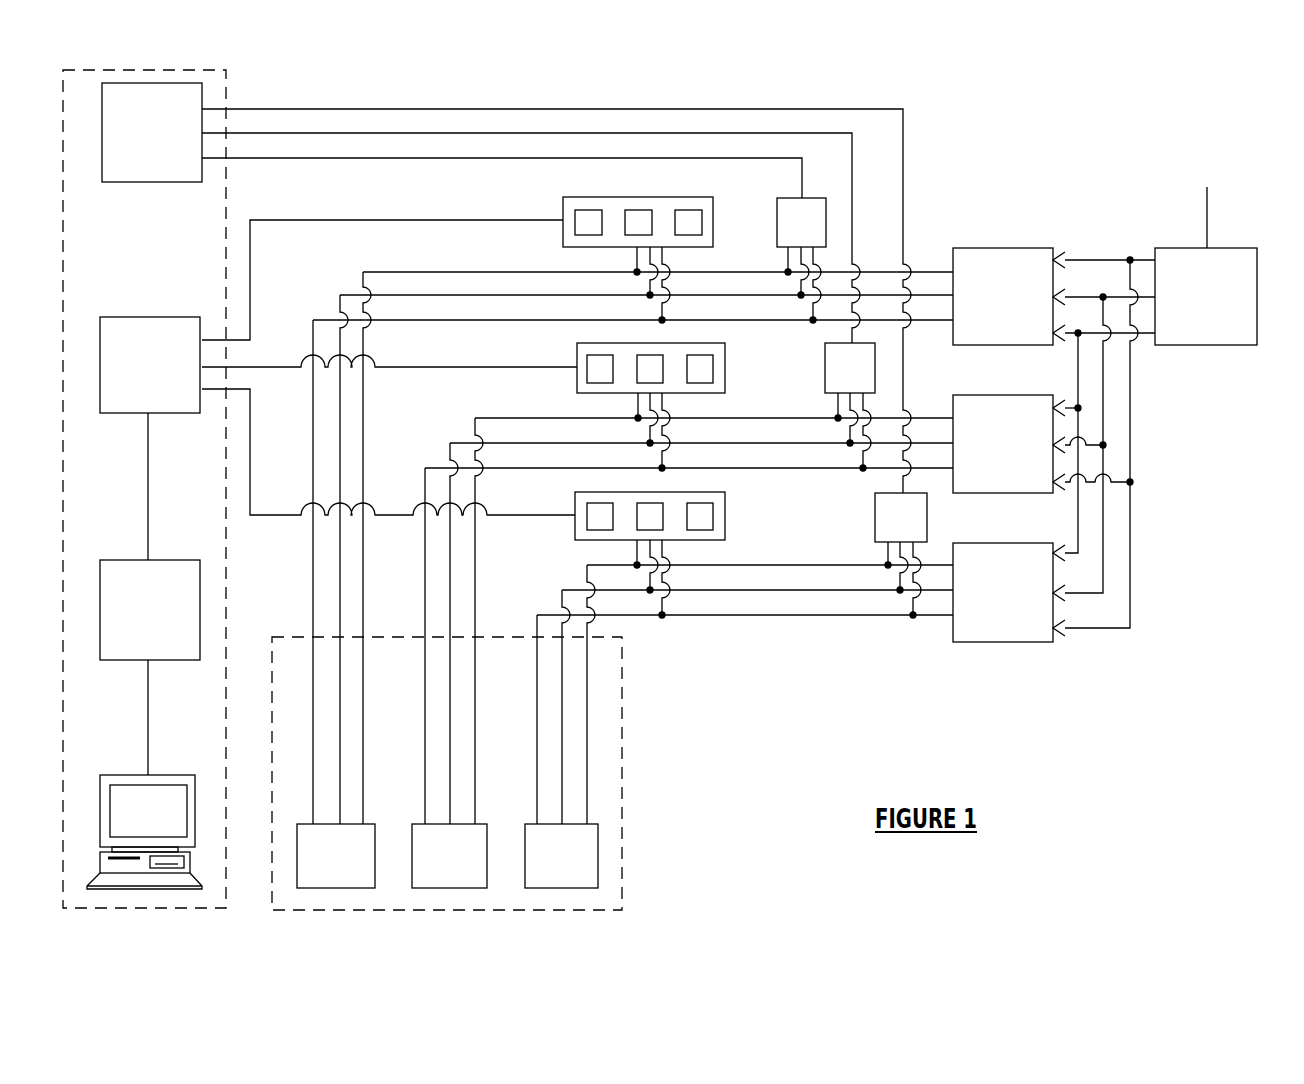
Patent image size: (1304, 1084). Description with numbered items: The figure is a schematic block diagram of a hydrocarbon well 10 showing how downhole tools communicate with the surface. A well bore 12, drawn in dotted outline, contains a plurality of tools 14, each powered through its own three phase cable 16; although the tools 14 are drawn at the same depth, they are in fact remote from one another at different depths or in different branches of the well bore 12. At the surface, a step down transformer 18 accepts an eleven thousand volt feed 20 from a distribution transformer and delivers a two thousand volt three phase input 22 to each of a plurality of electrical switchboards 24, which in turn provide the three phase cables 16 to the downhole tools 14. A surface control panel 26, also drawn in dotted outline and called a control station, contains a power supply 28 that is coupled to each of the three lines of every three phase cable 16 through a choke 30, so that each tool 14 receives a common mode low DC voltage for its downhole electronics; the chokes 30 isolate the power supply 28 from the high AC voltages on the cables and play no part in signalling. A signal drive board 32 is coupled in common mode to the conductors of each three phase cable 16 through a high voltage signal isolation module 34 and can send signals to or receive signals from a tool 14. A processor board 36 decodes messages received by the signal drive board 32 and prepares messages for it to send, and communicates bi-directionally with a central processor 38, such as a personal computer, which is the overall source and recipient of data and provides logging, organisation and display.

The hydrocarbon well 10 is at (1062, 757).
The well bore 12 is at (623, 750).
The tool 14 is at (353, 857).
The three phase cable 16 is at (450, 268).
The step down transformer 18 is at (1193, 262).
The feed 20 is at (1203, 210).
The three phase input 22 is at (1110, 285).
The electrical switchboard 24 is at (1012, 273).
The surface control panel 26 is at (207, 237).
The power supply 28 is at (160, 162).
The choke 30 is at (790, 223).
The signal drive board 32 is at (162, 343).
The high voltage signal isolation module 34 is at (568, 213).
The processor board 36 is at (137, 573).
The central processor 38 is at (135, 783).